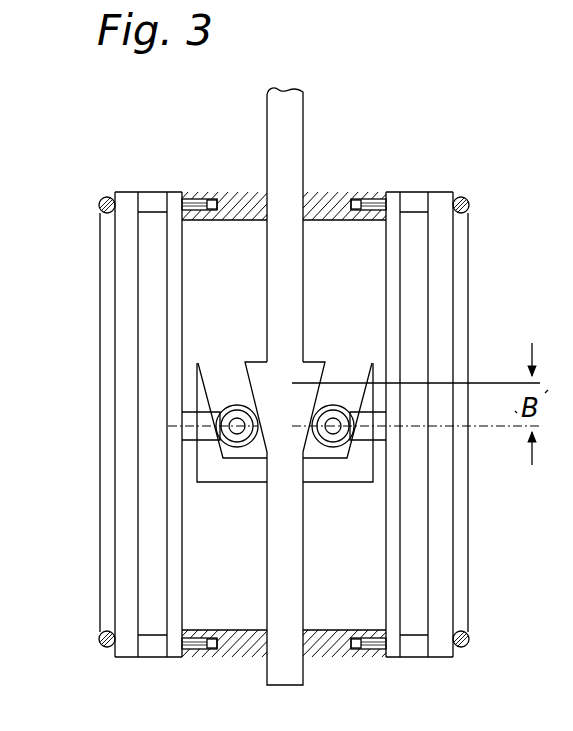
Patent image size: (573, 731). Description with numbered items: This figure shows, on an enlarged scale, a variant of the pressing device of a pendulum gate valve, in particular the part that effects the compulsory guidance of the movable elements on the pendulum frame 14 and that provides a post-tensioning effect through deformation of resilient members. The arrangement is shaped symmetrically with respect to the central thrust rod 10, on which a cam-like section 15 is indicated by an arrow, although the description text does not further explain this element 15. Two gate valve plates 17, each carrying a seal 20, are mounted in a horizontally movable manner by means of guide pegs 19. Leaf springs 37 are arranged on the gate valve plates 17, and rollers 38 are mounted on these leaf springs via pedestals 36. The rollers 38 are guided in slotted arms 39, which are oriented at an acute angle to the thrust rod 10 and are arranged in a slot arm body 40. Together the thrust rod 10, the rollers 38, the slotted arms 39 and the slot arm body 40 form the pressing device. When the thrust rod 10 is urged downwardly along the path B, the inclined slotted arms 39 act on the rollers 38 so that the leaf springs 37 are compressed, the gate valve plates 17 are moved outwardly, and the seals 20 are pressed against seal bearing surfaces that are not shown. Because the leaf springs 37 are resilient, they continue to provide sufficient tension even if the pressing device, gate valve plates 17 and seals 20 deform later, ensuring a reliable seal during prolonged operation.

The thrust rod 10 is at (278, 128).
The pendulum frame 14 is at (338, 208).
The cam wedge 15 is at (233, 356).
The gate valve plate 17 is at (505, 262).
The guide peg 19 is at (377, 200).
The seal 20 is at (62, 209).
The pedestal 36 is at (197, 427).
The leaf spring 37 is at (177, 542).
The roller 38 is at (242, 412).
The slotted arm 39 is at (203, 464).
The slot arm body 40 is at (254, 473).